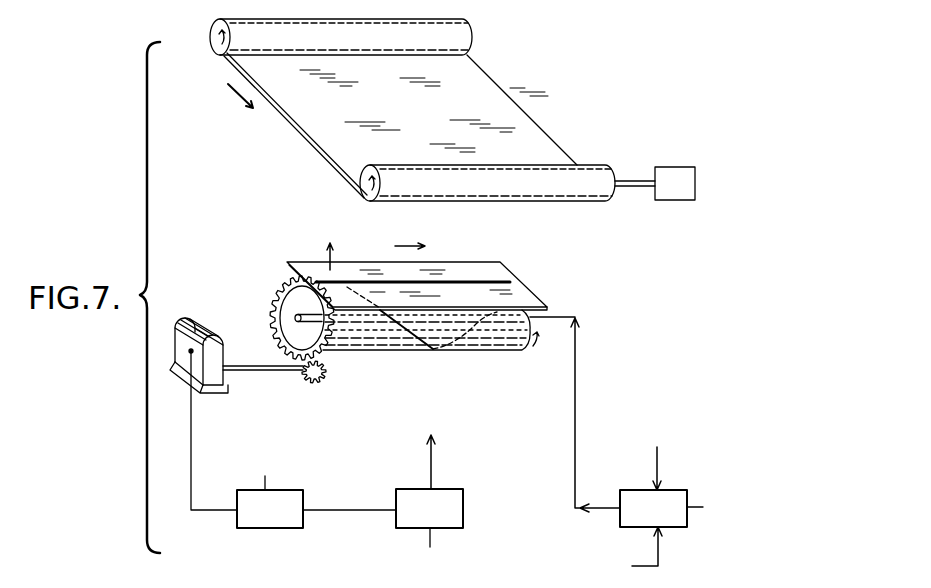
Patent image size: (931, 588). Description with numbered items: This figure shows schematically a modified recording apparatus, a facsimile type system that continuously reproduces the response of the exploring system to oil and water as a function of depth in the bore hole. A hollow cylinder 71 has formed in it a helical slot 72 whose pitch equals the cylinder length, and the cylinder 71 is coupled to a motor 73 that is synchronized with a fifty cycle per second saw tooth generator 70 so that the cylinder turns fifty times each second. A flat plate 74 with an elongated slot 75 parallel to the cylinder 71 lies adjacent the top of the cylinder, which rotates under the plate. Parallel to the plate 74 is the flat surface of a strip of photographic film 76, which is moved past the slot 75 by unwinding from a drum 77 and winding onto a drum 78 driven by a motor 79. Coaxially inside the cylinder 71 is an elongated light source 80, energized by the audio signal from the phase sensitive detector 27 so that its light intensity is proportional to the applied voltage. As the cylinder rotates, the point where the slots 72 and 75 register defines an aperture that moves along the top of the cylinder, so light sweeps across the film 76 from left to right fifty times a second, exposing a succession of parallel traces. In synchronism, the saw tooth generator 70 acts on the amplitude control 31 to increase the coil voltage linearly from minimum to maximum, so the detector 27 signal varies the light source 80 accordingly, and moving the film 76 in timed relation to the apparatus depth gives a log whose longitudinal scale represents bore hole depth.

The drum 77 is at (217, 30).
The strip of photographic film 76 is at (309, 131).
The drum 78 is at (593, 170).
The motor 79 is at (673, 172).
The flat plate 74 is at (503, 270).
The elongated slot 75 is at (462, 280).
The hollow cylinder 71 is at (513, 342).
The helical slot 72 is at (420, 345).
The elongated light source 80 is at (294, 318).
The motor 73 is at (203, 322).
The saw tooth generator 70 is at (273, 476).
The amplitude control 31 is at (433, 497).
The detector 27 is at (659, 436).